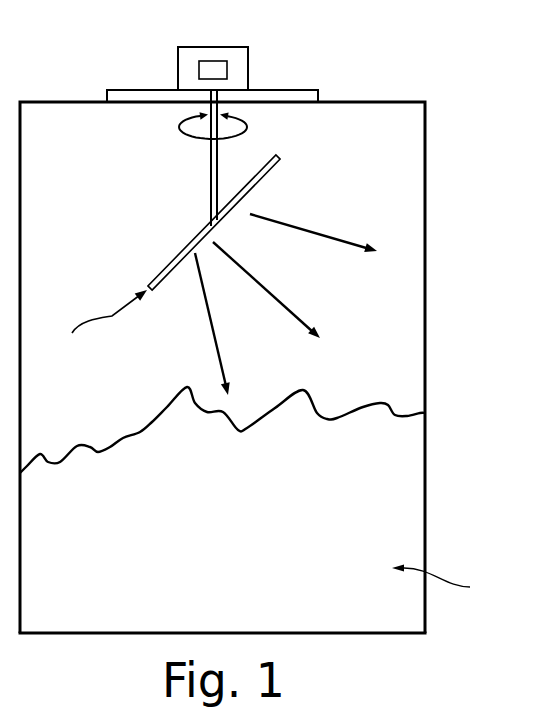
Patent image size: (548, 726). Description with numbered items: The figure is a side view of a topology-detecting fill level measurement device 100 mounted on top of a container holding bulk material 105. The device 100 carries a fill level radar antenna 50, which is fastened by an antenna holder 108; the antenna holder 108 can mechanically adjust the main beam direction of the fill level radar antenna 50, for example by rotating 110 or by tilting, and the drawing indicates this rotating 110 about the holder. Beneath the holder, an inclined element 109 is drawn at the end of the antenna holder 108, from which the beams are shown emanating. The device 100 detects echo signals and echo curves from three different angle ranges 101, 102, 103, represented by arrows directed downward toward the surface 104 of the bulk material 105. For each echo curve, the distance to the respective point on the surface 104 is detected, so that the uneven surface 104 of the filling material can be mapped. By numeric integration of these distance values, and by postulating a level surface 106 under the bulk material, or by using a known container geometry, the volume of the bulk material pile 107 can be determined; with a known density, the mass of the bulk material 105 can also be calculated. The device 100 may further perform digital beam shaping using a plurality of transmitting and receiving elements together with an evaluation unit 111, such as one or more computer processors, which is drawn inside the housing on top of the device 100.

The fill level measurement device 100 is at (242, 63).
The evaluation unit 111 is at (200, 64).
The rotating 110 is at (246, 121).
The antenna holder 108 is at (209, 180).
The mirror 109 is at (284, 158).
The fill level radar antenna 50 is at (98, 330).
The angle range 101 is at (208, 330).
The angle range 102 is at (268, 297).
The angle range 103 is at (346, 244).
The surface 104 is at (327, 410).
The bulk material 105 is at (408, 502).
The level surface 106 is at (235, 631).
The bulk material pile 107 is at (456, 585).